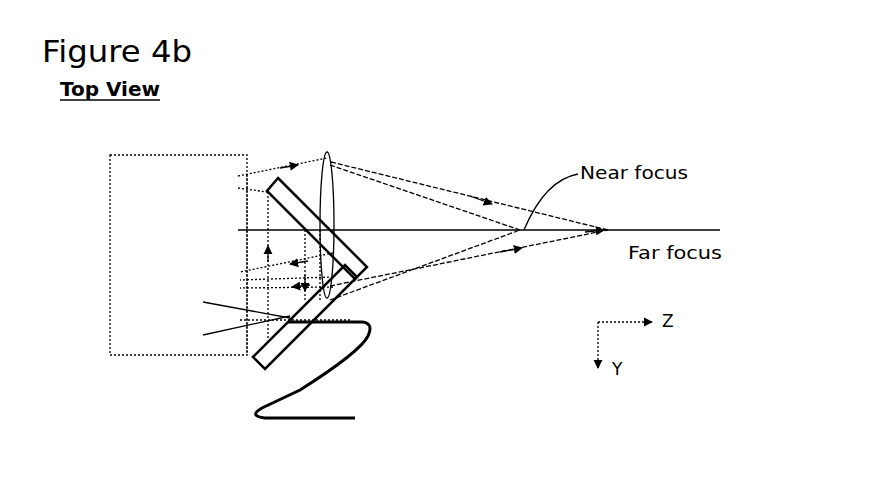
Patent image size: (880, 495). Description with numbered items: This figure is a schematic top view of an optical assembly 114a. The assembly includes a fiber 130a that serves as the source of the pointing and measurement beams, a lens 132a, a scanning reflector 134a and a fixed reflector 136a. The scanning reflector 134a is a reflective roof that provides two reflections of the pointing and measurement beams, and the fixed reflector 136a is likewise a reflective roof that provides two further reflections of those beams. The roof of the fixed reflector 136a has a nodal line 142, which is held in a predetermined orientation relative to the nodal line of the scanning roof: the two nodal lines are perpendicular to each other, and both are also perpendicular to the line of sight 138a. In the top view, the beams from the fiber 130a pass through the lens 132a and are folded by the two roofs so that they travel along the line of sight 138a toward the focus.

The optical assembly 114a is at (498, 144).
The fiber 130a is at (374, 386).
The lens 132a is at (327, 152).
The scanning reflector 134a is at (108, 342).
The fixed reflector 136a is at (350, 300).
The line of sight 138a is at (678, 230).
The nodal line 142 is at (365, 258).